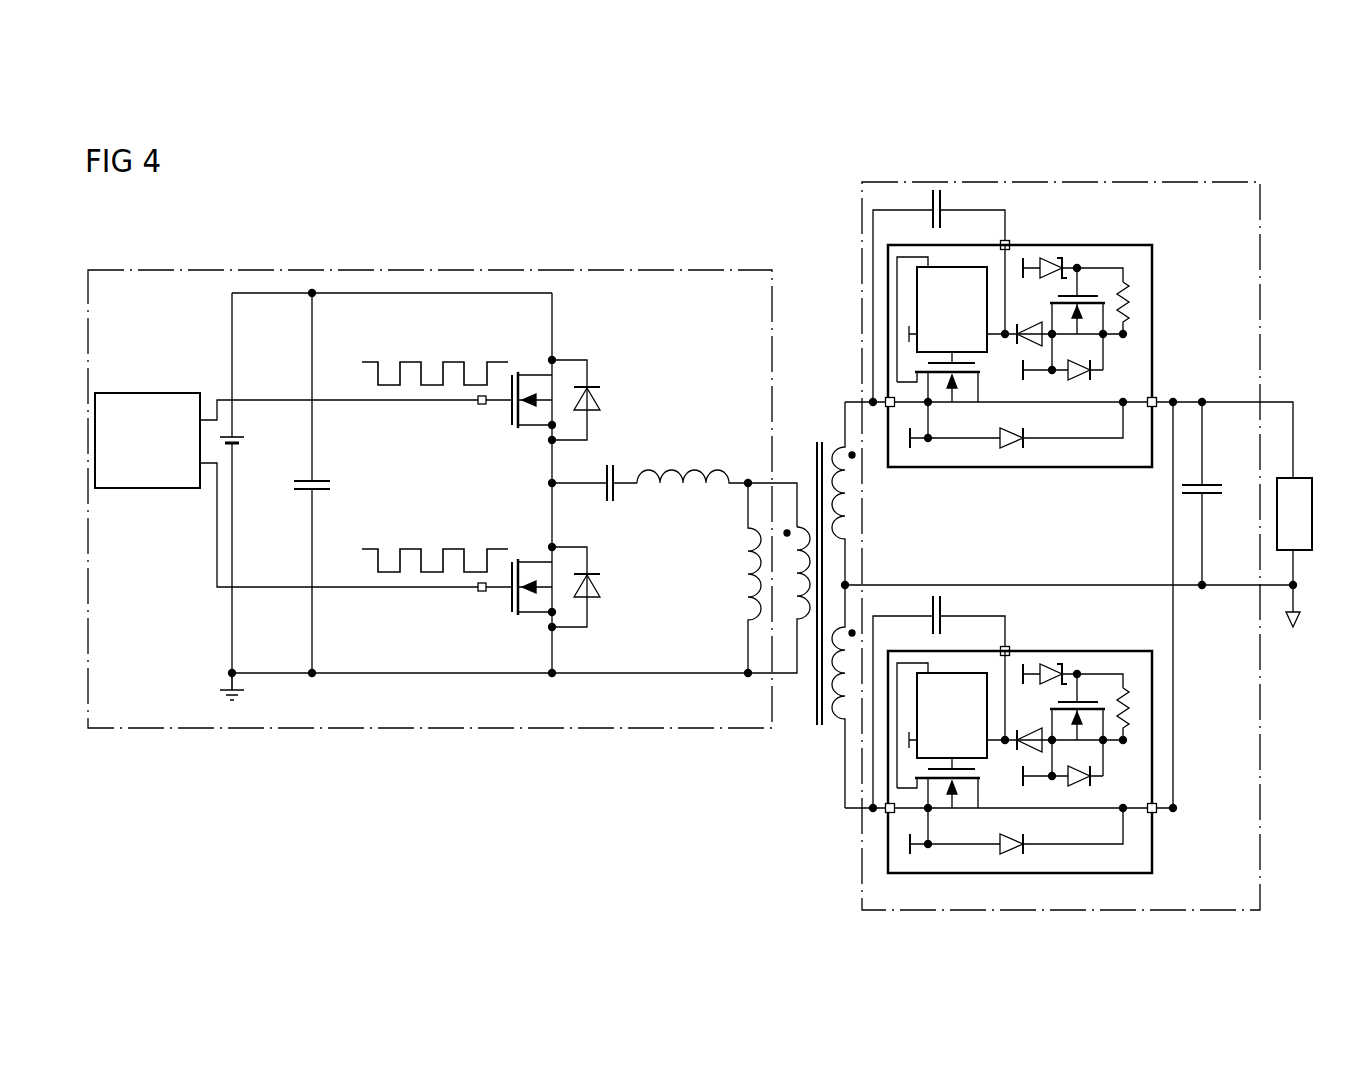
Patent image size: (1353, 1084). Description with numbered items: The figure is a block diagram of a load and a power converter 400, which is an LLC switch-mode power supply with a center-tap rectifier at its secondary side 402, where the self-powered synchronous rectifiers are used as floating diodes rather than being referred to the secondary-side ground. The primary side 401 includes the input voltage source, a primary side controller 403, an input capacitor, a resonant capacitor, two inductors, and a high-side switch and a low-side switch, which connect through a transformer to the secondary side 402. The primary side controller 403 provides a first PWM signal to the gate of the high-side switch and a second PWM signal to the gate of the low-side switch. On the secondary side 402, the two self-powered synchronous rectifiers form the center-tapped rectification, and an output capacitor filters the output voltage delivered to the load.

The power converter 400 is at (656, 207).
The primary side 401 is at (497, 268).
The secondary side 402 is at (862, 212).
The primary side controller 403 is at (147, 393).